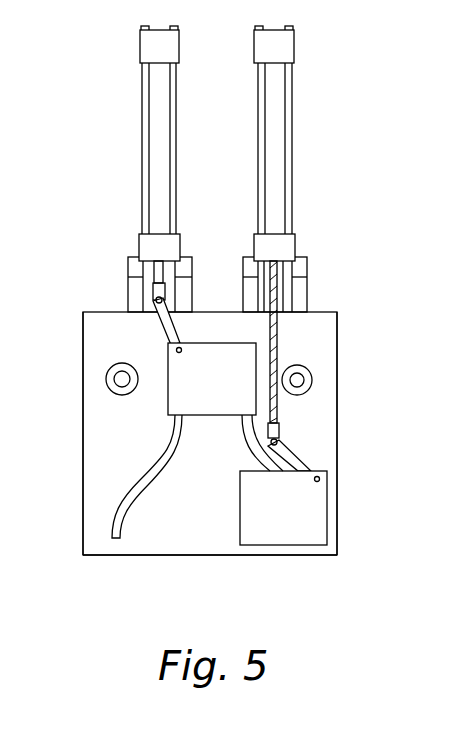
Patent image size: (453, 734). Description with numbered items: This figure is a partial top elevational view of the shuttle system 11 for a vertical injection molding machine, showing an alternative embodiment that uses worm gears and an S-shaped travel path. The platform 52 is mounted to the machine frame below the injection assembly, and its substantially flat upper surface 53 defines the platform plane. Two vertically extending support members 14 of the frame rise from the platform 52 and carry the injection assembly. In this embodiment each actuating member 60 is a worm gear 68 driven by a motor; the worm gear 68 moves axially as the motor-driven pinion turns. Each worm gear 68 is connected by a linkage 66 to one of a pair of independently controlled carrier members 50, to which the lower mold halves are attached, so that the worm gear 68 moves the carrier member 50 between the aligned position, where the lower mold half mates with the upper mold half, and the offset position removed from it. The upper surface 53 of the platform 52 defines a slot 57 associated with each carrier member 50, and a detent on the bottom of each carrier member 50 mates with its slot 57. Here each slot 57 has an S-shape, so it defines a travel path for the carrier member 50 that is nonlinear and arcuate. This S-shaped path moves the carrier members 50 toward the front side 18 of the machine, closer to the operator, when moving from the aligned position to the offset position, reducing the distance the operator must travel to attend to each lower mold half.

The shuttle system 11 is at (354, 305).
The support members 14 is at (313, 378).
The front side 18 is at (205, 556).
The carrier member 50 is at (168, 392).
The platform 52 is at (83, 480).
The upper surface 53 is at (338, 464).
The slot 57 is at (252, 450).
The actuating member 60 is at (336, 123).
The linkage 66 is at (168, 336).
The worm gear 68 is at (153, 278).